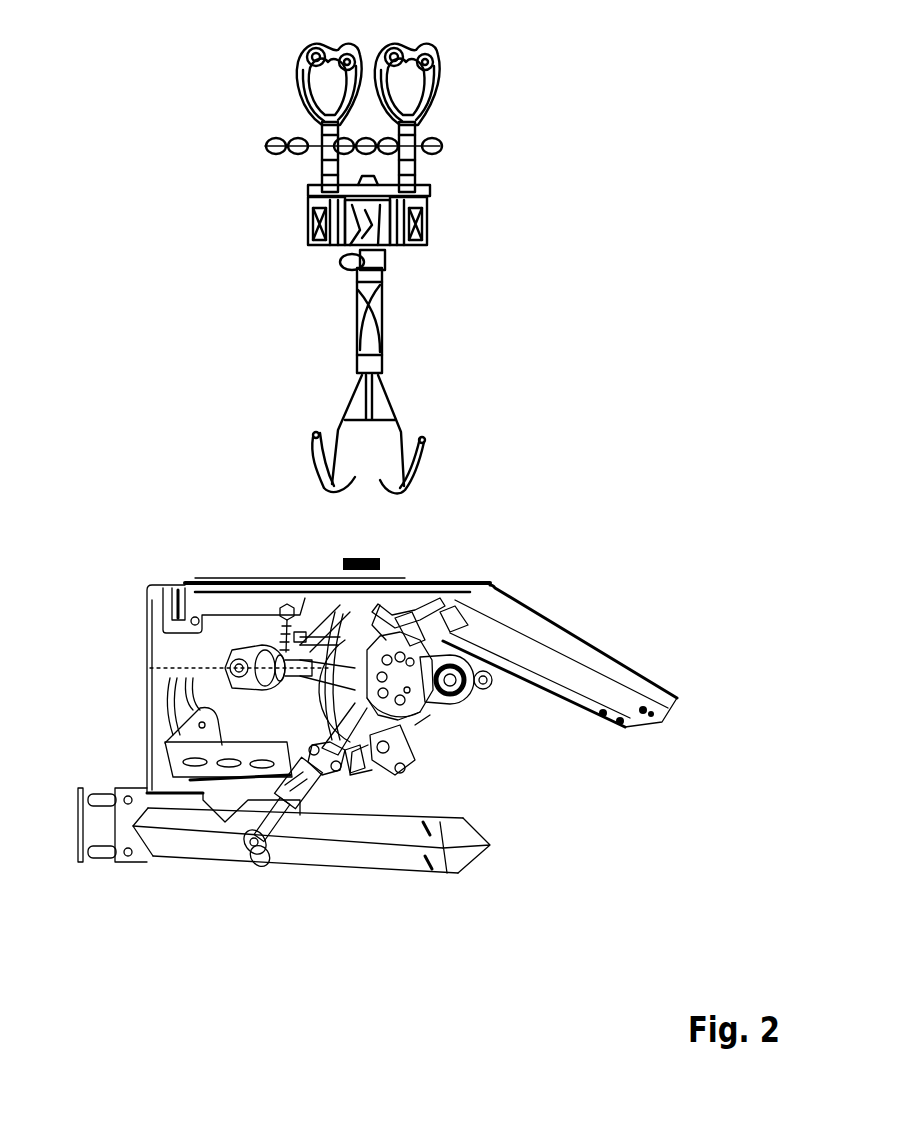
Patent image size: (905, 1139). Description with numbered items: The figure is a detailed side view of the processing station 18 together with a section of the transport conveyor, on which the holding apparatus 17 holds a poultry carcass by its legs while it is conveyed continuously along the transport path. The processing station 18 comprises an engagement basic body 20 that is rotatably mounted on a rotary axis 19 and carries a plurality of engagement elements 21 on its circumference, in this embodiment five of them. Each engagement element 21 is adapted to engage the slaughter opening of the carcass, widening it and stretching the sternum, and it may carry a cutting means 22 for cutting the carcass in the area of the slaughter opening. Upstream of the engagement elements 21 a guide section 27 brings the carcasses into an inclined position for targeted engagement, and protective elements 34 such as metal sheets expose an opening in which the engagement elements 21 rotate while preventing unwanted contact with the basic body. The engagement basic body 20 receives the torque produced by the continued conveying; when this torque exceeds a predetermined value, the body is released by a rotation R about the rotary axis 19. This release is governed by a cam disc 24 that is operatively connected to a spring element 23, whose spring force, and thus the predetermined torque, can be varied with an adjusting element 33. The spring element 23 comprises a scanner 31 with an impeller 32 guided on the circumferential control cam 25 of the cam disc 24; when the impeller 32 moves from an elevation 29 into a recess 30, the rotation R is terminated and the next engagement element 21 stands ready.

The holding apparatus 17 is at (385, 415).
The processing station 18 is at (110, 518).
The rotary axis 19 is at (460, 694).
The engagement basic body 20 is at (315, 695).
The engagement element 21 is at (228, 657).
The cutting means 22 is at (275, 618).
The spring element 23 is at (325, 799).
The cam disc 24 is at (420, 625).
The circumferential control cam 25 is at (378, 625).
The guide section 27 is at (558, 635).
The elevation 29 is at (432, 720).
The recess 30 is at (453, 740).
The scanner 31 is at (352, 742).
The impeller 32 is at (408, 765).
The adjusting element 33 is at (261, 884).
The protective element 34 is at (263, 580).
The rotation R is at (496, 692).